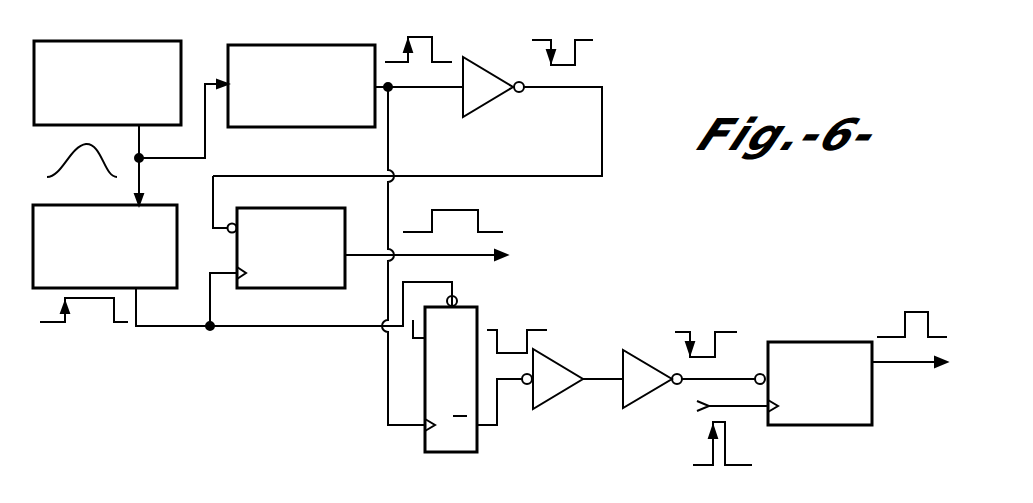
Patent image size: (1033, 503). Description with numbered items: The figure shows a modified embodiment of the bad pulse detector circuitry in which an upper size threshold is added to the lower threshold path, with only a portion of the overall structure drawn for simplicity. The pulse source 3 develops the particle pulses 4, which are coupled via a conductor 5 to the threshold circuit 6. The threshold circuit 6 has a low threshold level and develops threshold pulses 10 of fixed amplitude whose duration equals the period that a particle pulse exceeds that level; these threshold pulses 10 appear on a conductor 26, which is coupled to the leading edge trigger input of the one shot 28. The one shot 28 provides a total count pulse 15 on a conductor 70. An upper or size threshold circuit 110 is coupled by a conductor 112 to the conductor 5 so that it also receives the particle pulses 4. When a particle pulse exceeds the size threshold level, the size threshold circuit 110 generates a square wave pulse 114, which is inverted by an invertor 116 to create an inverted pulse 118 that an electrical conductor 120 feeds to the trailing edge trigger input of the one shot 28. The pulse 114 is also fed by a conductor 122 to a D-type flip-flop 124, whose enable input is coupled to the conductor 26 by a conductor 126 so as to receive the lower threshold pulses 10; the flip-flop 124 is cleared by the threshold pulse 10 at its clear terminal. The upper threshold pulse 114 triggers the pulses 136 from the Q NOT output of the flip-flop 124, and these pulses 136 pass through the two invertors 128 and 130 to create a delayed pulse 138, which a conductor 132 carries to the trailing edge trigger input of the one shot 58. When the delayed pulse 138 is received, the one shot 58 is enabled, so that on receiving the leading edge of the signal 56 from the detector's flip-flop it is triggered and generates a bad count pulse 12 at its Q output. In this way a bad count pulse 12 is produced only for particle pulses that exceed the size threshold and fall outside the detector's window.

The pulse source 3 is at (130, 41).
The particle pulses 4 is at (72, 148).
The conductor 5 is at (141, 143).
The threshold circuit 6 is at (152, 205).
The threshold pulses 10 is at (84, 312).
The bad count pulse 12 is at (913, 311).
The total count pulse 15 is at (480, 224).
The conductor 26 is at (165, 328).
The one shot 28 is at (286, 289).
The signal 56 is at (726, 445).
The one shot 58 is at (804, 342).
The conductor 70 is at (368, 258).
The size threshold circuit 110 is at (318, 127).
The conductor 112 is at (206, 146).
The square wave pulse 114 is at (446, 24).
The invertor 116 is at (497, 99).
The inverted pulse 118 is at (594, 46).
The electrical conductor 120 is at (412, 176).
The conductor 122 is at (391, 135).
The D-type flip-flop 124 is at (470, 306).
The conductor 126 is at (282, 328).
The invertor 128 is at (562, 395).
The invertor 130 is at (641, 350).
The conductor 132 is at (683, 386).
The pulses 136 is at (508, 336).
The delayed pulse 138 is at (686, 331).